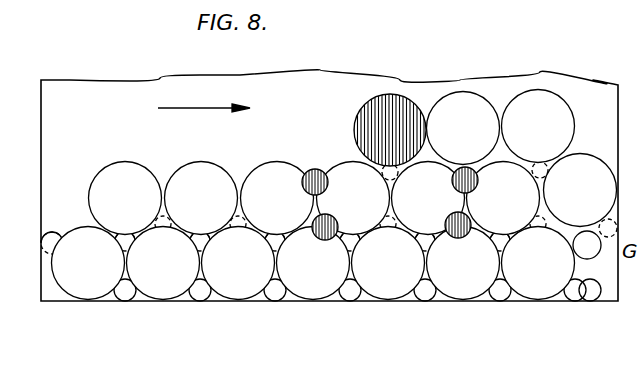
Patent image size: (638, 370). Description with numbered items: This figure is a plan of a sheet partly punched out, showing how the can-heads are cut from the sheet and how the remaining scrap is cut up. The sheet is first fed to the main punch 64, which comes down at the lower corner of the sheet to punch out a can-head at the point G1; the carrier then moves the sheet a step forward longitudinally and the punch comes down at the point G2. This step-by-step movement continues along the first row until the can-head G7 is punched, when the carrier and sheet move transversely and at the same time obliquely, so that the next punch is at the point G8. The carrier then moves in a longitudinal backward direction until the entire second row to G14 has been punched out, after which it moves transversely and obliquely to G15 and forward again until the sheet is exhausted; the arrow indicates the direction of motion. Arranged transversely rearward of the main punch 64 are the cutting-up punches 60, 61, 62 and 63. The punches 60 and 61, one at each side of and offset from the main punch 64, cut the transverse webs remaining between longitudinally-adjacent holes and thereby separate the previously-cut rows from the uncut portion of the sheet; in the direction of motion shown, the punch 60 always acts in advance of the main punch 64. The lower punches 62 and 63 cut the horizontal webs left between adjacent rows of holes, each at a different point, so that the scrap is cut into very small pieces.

The cutting-up punch 60 is at (328, 183).
The cutting-up punch 61 is at (478, 180).
The cutting-up punch 62 is at (337, 226).
The cutting-up punch 63 is at (455, 215).
The main punch 64 is at (380, 128).
The first punching point G1 is at (538, 263).
The second punching point G2 is at (463, 263).
The seventh can-head G7 is at (88, 263).
The first punching point of second row G8 is at (125, 198).
The last punching point of second row G14 is at (580, 190).
The first punching point of third row G15 is at (538, 126).